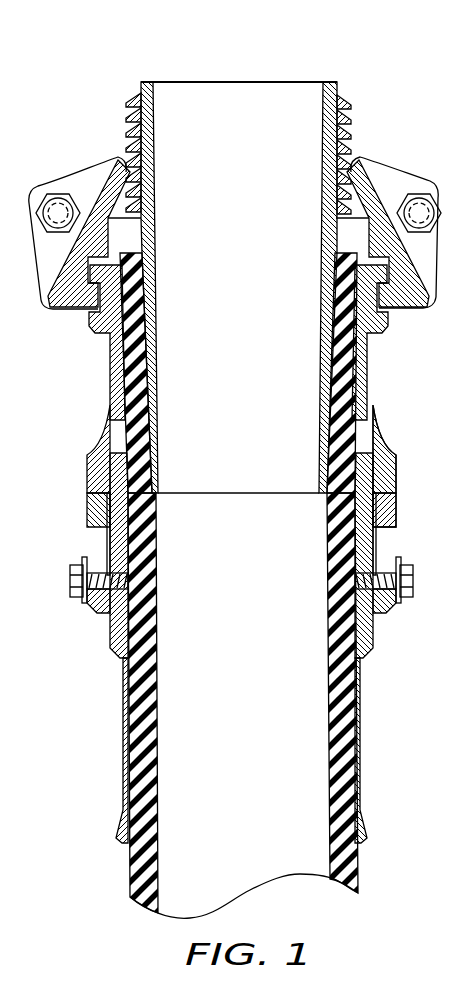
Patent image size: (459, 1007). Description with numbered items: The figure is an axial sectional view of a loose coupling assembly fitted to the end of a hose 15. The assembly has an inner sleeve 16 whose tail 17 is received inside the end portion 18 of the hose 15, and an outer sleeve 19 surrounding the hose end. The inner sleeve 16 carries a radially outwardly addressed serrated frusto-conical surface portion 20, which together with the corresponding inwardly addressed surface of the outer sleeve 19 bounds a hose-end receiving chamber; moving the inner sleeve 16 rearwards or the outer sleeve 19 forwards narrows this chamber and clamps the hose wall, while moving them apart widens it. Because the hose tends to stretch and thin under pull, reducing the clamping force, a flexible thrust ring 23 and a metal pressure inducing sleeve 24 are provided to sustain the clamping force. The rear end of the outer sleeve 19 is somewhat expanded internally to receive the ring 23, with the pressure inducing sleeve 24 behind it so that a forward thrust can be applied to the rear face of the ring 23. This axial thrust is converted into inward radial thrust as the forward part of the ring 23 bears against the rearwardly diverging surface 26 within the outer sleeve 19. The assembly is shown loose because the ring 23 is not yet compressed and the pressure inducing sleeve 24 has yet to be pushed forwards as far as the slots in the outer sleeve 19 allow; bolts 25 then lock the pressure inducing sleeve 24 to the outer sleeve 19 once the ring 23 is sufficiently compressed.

The hose 15 is at (130, 874).
The inner sleeve 16 is at (152, 185).
The tail 17 is at (320, 345).
The end portion 18 is at (137, 368).
The outer sleeve 19 is at (397, 452).
The serrated frusto-conical surface portion 20 is at (153, 308).
The flexible thrust ring 23 is at (107, 494).
The pressure inducing sleeve 24 is at (112, 632).
The bolts 25 is at (73, 562).
The rearwardly diverging surface 26 is at (103, 450).